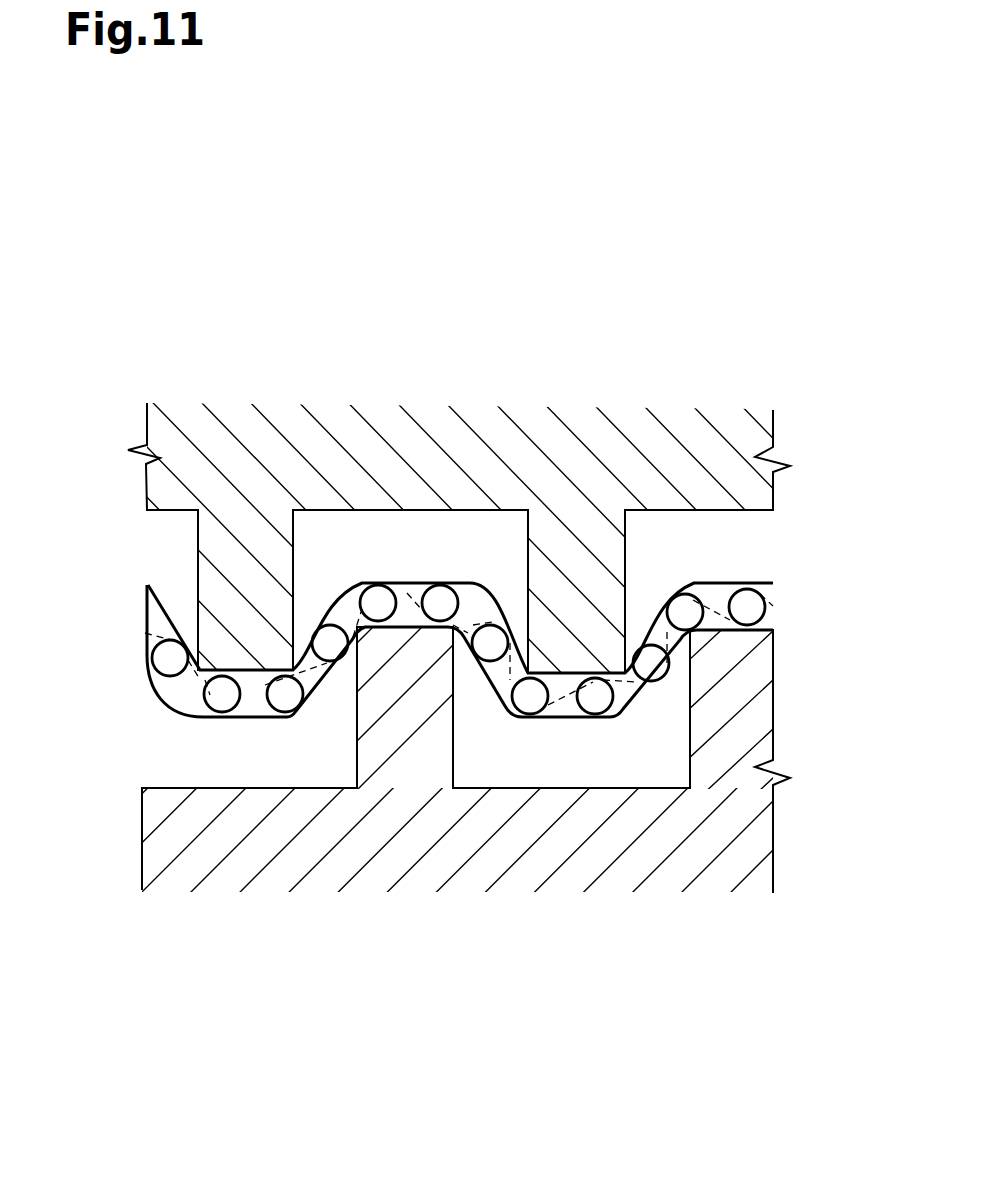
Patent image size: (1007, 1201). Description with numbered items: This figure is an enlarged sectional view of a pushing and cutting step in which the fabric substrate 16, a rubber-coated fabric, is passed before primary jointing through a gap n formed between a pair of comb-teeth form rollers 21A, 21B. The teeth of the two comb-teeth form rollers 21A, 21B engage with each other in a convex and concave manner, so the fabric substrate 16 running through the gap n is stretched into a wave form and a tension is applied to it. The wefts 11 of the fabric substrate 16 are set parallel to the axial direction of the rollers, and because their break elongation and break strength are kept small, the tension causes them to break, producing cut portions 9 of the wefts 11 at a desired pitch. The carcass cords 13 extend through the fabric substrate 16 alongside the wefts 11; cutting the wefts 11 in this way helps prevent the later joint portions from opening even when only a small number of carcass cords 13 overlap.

The gap n is at (385, 553).
The comb-teeth form roller 21A is at (520, 380).
The comb-teeth form roller 21B is at (492, 951).
The cut portion 9 is at (349, 617).
The carcass cord 13 is at (160, 655).
The fabric substrate 16 is at (160, 694).
The weft 11 is at (245, 700).